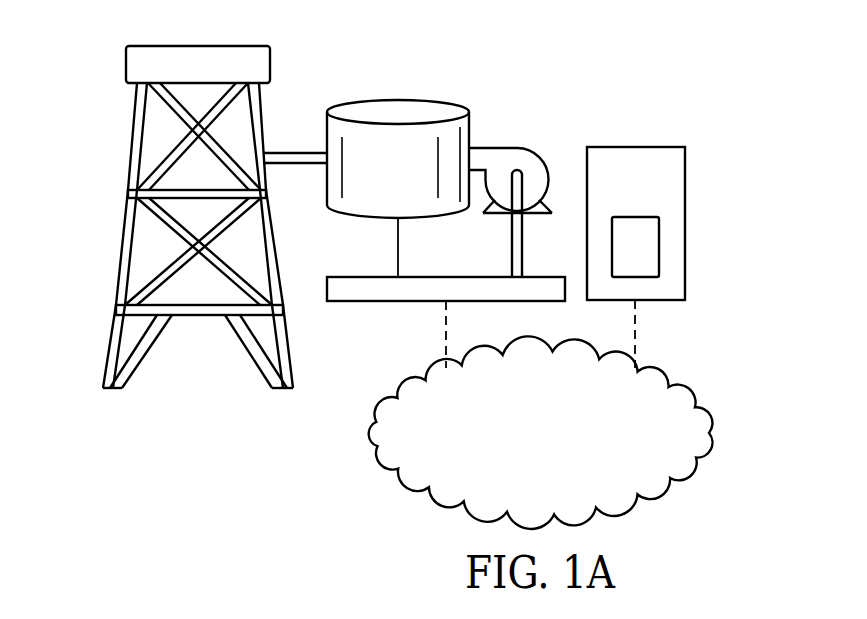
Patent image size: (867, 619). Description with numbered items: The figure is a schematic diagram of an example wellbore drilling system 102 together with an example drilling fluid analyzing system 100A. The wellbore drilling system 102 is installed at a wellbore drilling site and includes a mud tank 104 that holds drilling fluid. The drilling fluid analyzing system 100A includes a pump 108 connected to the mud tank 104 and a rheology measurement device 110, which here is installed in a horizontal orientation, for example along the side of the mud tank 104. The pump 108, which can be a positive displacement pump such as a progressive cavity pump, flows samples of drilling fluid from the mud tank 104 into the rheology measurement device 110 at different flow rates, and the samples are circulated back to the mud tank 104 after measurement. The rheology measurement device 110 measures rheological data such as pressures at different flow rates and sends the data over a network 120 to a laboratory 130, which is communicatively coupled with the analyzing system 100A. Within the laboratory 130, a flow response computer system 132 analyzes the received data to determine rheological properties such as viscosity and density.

The drilling fluid analyzing system 100A is at (724, 68).
The wellbore drilling system 102 is at (86, 82).
The mud tank 104 is at (420, 182).
The pump 108 is at (517, 147).
The rheology measurement device 110 is at (388, 302).
The network 120 is at (522, 448).
The laboratory 130 is at (648, 147).
The flow response computer system 132 is at (635, 217).